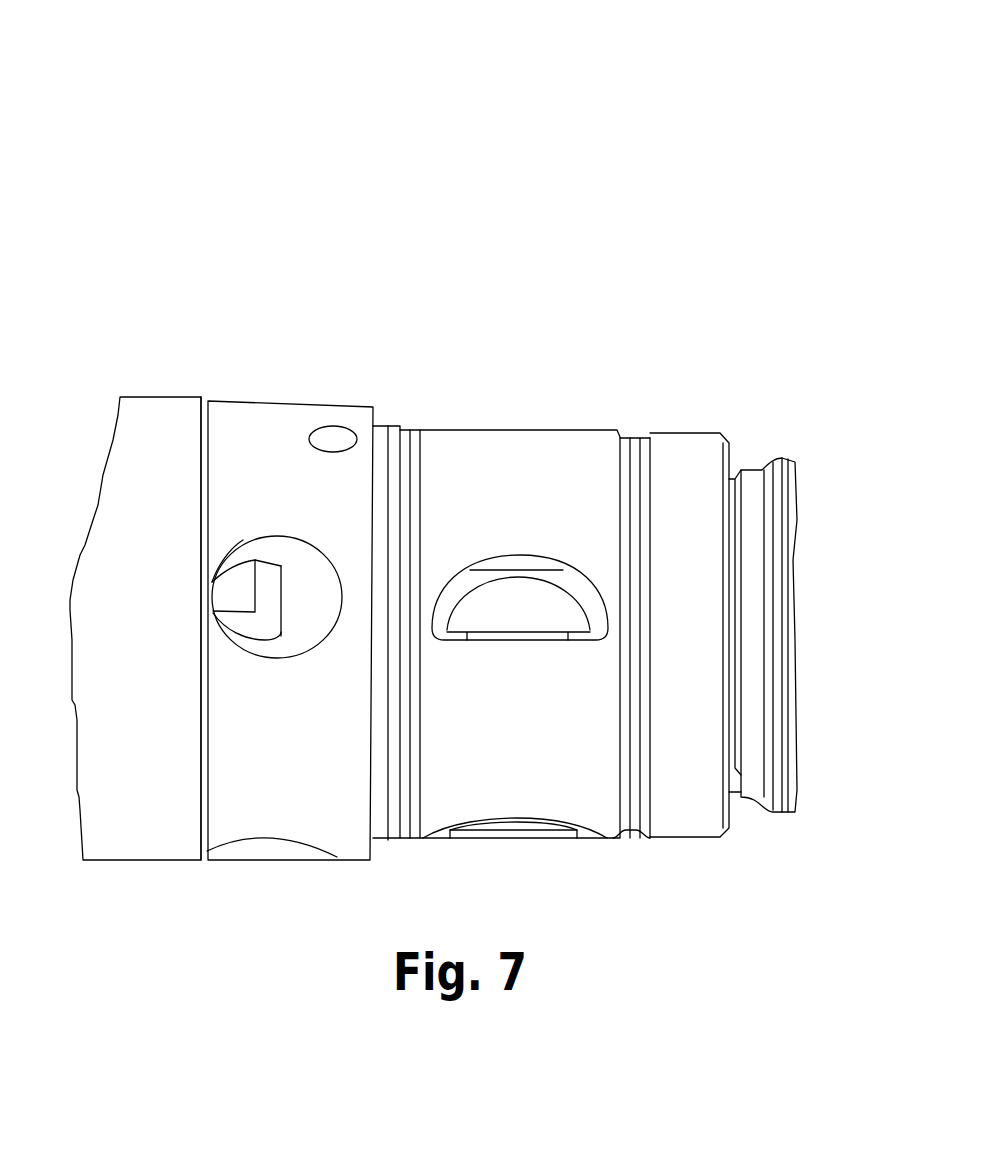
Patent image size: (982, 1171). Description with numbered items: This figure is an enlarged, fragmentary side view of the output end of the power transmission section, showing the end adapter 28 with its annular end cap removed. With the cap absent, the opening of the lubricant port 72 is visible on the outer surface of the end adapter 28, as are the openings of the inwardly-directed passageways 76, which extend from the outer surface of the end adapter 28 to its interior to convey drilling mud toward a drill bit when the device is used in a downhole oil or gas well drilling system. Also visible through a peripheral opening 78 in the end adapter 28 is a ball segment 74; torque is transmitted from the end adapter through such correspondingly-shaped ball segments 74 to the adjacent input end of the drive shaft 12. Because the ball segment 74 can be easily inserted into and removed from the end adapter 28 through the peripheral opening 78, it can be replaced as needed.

The drive shaft 12 is at (788, 570).
The end adapter 28 is at (128, 600).
The lubricant port 72 is at (337, 440).
The ball segment 74 is at (568, 620).
The passageway 76 is at (330, 602).
The peripheral opening 78 is at (447, 630).